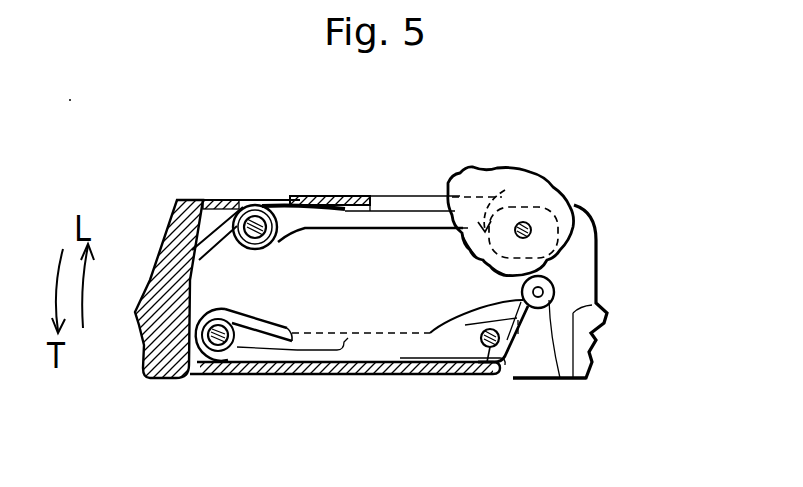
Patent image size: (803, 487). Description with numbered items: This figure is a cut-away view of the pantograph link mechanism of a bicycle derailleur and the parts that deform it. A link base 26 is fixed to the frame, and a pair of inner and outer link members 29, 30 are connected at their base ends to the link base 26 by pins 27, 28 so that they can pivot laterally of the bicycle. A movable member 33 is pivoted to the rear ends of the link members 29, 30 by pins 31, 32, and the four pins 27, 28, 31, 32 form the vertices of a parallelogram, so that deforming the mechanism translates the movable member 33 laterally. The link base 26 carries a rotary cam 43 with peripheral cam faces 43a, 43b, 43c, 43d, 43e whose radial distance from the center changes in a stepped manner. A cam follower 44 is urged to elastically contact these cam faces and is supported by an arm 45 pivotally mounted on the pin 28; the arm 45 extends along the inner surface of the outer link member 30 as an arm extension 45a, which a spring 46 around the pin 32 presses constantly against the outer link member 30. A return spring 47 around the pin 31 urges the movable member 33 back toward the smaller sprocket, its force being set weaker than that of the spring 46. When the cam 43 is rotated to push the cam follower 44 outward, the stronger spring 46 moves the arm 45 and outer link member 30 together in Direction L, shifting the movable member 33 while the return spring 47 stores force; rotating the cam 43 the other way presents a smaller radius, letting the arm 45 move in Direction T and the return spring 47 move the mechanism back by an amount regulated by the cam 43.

The link base 26 is at (597, 249).
The pin 27 is at (526, 224).
The pin 28 is at (480, 382).
The inner link member 29 is at (395, 197).
The outer link member 30 is at (357, 380).
The pin 31 is at (267, 200).
The pin 32 is at (204, 380).
The movable member 33 is at (153, 380).
The rotary cam 43 is at (527, 170).
The cam face 43a is at (556, 293).
The cam face 43b is at (504, 278).
The cam surface 43c is at (477, 261).
The cam surface 43d is at (427, 207).
The cam surface 43e is at (452, 195).
The cam follower 44 is at (572, 378).
The arm 45 is at (540, 382).
The arm extension 45a is at (412, 382).
The spring 46 is at (235, 380).
The return spring 47 is at (247, 200).